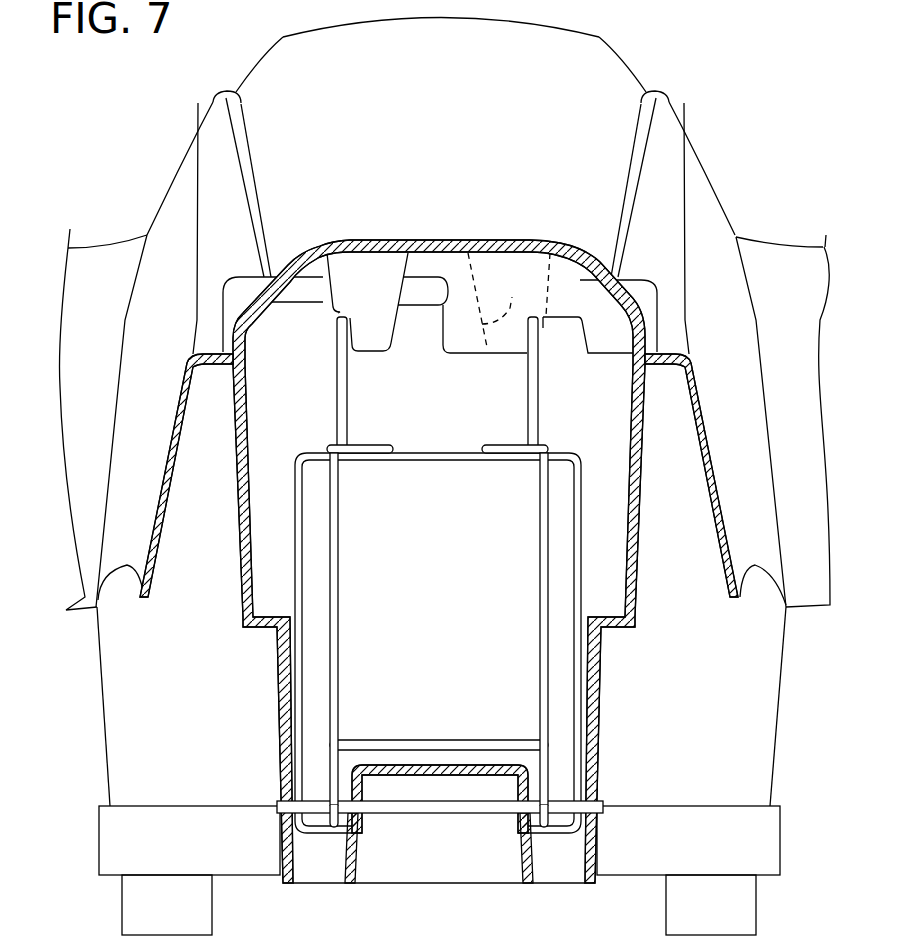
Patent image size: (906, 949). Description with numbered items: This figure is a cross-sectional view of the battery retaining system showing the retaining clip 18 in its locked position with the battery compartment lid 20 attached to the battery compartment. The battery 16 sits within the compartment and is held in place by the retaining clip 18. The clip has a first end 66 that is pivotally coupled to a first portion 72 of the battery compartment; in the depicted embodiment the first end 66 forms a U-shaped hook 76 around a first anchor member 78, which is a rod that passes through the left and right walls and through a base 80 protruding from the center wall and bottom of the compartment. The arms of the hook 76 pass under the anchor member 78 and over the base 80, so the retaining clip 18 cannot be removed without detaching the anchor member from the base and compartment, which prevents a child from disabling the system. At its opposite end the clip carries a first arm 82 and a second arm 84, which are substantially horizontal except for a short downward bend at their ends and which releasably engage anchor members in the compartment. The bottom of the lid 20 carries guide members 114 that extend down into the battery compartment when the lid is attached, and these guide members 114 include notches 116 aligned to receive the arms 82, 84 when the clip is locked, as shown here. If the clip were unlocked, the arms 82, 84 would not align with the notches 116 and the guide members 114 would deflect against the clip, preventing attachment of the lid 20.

The battery 16 is at (568, 446).
The retaining clip 18 is at (333, 450).
The battery compartment lid 20 is at (415, 240).
The first end 66 is at (449, 738).
The first portion 72 is at (439, 629).
The hook 76 is at (333, 828).
The first anchor member 78 is at (429, 808).
The base 80 is at (388, 766).
The first arm 82 is at (337, 338).
The second arm 84 is at (527, 348).
The guide members 114 is at (508, 312).
The notches 116 is at (350, 326).